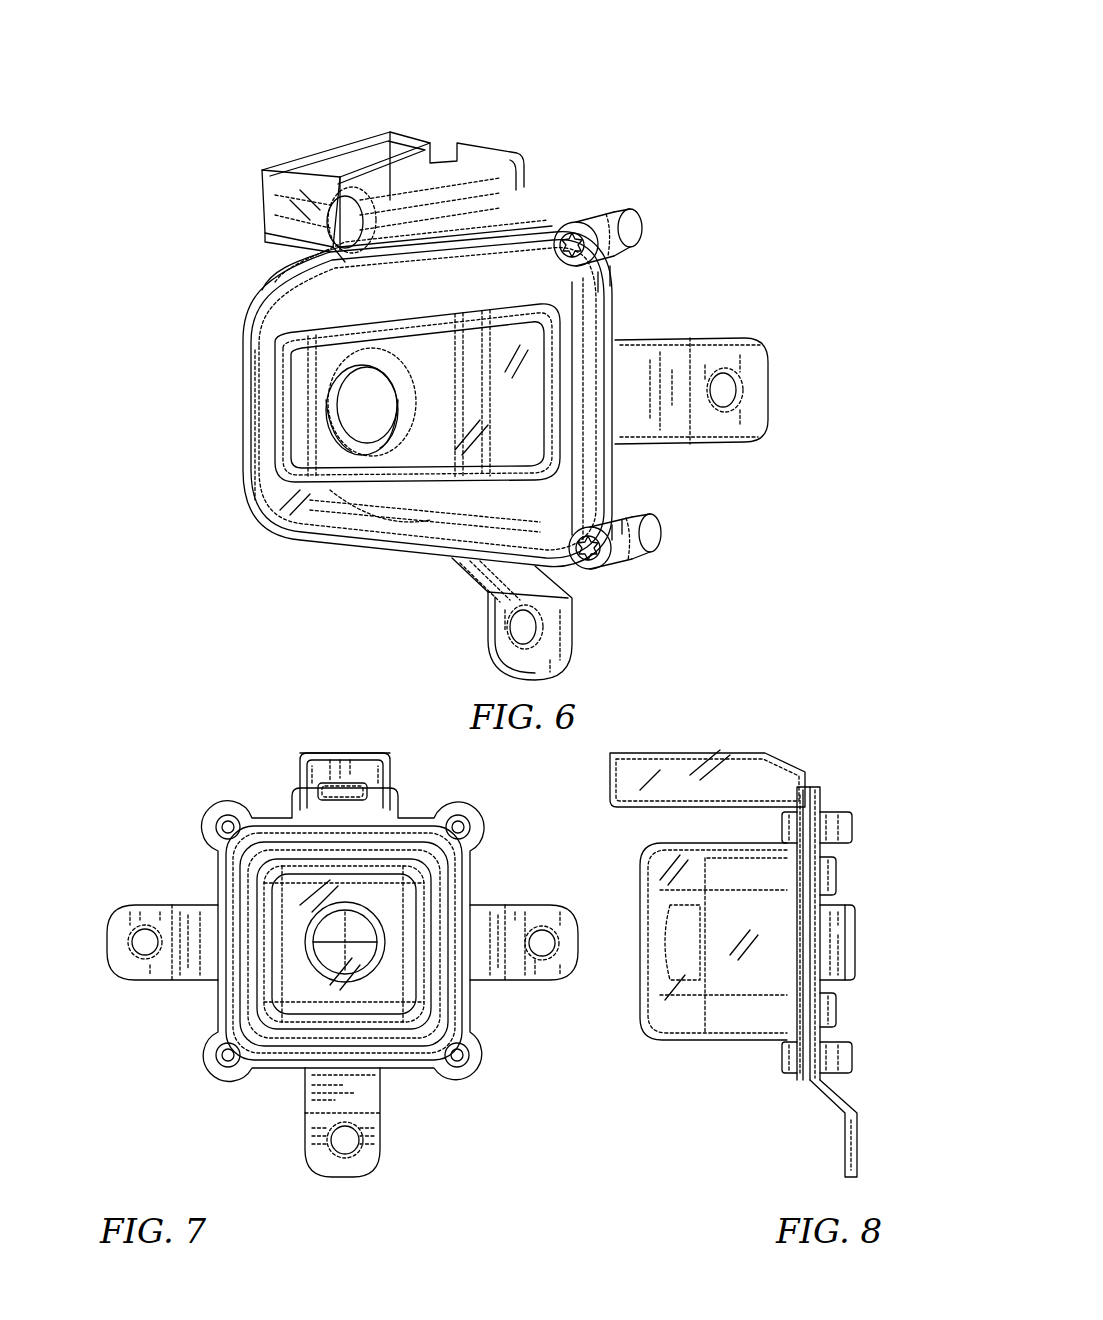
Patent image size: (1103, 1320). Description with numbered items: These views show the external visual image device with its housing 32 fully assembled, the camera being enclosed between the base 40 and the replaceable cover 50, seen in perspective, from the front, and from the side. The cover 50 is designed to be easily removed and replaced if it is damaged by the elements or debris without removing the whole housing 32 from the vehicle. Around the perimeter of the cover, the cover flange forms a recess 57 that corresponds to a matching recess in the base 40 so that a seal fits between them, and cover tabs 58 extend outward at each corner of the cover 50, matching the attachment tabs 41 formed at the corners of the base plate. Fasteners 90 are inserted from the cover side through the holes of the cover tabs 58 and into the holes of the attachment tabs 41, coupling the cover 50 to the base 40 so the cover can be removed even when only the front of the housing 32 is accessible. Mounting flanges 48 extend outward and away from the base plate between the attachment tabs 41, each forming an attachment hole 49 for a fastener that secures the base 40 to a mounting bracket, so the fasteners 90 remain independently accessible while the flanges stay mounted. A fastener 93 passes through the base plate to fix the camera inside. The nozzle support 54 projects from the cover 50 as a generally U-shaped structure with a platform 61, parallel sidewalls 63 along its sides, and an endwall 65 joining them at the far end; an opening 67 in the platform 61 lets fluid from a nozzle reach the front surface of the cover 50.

In FIG. 6, the housing 32 is at (183, 208).
In FIG. 7, the housing 32 is at (99, 788).
In FIG. 8, the housing 32 is at (832, 673).
In FIG. 7, the base 40 is at (170, 999).
In FIG. 8, the base 40 is at (822, 987).
In FIG. 6, the attachment tabs 41 is at (622, 212).
In FIG. 8, the attachment tabs 41 is at (818, 812).
In FIG. 6, the mounting flanges 48 is at (750, 385).
In FIG. 7, the mounting flanges 48 is at (113, 938).
In FIG. 8, the mounting flanges 48 is at (848, 930).
In FIG. 6, the attachment hole 49 is at (727, 376).
In FIG. 7, the attachment hole 49 is at (136, 931).
In FIG. 6, the cover 50 is at (252, 477).
In FIG. 7, the cover 50 is at (290, 1012).
In FIG. 8, the cover 50 is at (666, 1050).
In FIG. 6, the nozzle support 54 is at (369, 104).
In FIG. 7, the nozzle support 54 is at (334, 746).
In FIG. 8, the nozzle support 54 is at (707, 778).
In FIG. 7, the recess 57 is at (422, 1052).
In FIG. 6, the cover tabs 58 is at (585, 212).
In FIG. 8, the cover tabs 58 is at (806, 810).
In FIG. 8, the platform 61 is at (652, 803).
In FIG. 7, the parallel sidewalls 63 is at (300, 775).
In FIG. 8, the parallel sidewalls 63 is at (698, 770).
In FIG. 7, the endwall 65 is at (330, 769).
In FIG. 8, the endwall 65 is at (610, 766).
In FIG. 7, the opening 67 is at (353, 795).
In FIG. 8, the opening 67 is at (607, 811).
In FIG. 6, the fasteners 90 is at (592, 248).
In FIG. 8, the fasteners 90 is at (783, 830).
In FIG. 8, the fastener 93 is at (826, 866).